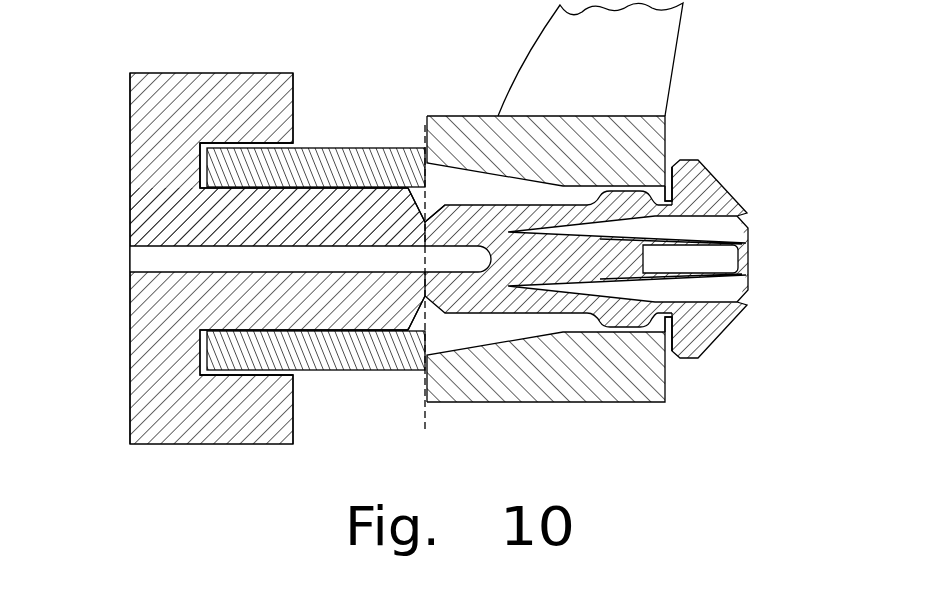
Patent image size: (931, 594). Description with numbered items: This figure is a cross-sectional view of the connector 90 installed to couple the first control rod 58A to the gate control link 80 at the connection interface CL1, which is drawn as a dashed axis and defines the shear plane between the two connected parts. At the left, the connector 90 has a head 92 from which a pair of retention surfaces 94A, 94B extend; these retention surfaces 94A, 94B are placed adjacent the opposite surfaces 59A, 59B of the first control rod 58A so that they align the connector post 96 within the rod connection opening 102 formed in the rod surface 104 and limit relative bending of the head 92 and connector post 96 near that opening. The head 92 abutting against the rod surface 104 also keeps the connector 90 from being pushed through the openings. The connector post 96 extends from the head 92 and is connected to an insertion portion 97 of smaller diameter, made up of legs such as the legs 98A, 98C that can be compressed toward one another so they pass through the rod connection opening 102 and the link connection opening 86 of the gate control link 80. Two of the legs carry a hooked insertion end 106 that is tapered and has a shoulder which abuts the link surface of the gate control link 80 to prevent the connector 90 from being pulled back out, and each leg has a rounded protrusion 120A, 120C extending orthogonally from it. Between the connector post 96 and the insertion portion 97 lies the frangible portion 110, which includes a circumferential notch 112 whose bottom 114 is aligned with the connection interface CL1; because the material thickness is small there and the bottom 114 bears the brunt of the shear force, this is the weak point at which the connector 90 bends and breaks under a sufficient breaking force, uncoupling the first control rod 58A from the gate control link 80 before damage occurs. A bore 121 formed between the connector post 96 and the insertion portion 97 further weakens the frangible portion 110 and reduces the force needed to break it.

The connector 90 is at (102, 215).
The head 92 is at (143, 140).
The retention surface 94A is at (256, 137).
The retention surface 94B is at (238, 378).
The surface of the control rod 59A is at (238, 153).
The surface of the control rod 59B is at (310, 372).
The first control rod 58A is at (380, 153).
The connector post 96 is at (363, 200).
The rod connection opening 102 is at (423, 215).
The rod surface 104 is at (207, 166).
The bore 121 is at (173, 258).
The bottom of the notch 114 is at (428, 290).
The notch 112 is at (420, 300).
The frangible portion 110 is at (436, 325).
The gate control link 80 is at (550, 130).
The link connection opening 86 is at (582, 185).
The insertion portion 97 is at (497, 317).
The protrusion 120A is at (620, 186).
The protrusion 120C is at (622, 323).
The leg 98A is at (667, 165).
The leg 98C is at (662, 320).
The hooked insertion end 106 is at (728, 202).
The connection interface CL1 is at (420, 410).